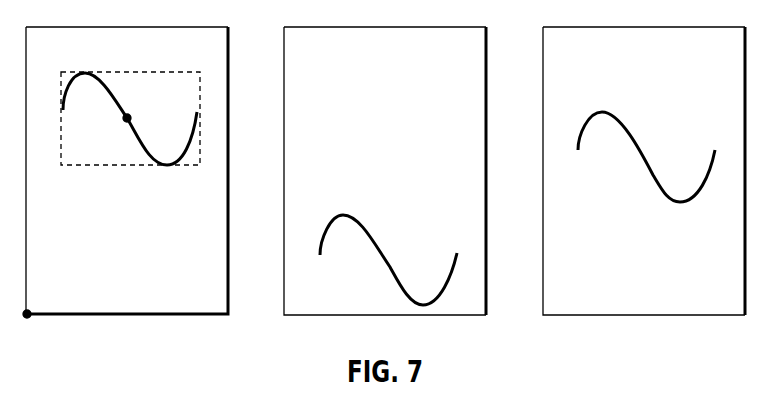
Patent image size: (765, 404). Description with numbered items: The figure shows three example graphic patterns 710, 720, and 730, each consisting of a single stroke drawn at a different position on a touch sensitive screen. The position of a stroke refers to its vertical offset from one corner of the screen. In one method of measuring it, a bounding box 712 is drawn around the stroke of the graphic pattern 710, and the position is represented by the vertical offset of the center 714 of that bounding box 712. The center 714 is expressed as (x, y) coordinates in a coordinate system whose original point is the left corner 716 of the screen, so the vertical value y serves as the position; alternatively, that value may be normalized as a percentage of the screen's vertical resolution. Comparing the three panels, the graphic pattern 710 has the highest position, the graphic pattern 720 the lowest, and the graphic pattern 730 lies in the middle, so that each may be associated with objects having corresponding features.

The graphic pattern 710 is at (108, 82).
The bounding box 712 is at (178, 72).
The center 714 is at (128, 117).
The left corner 716 is at (29, 312).
The graphic pattern 720 is at (365, 222).
The graphic pattern 730 is at (625, 118).